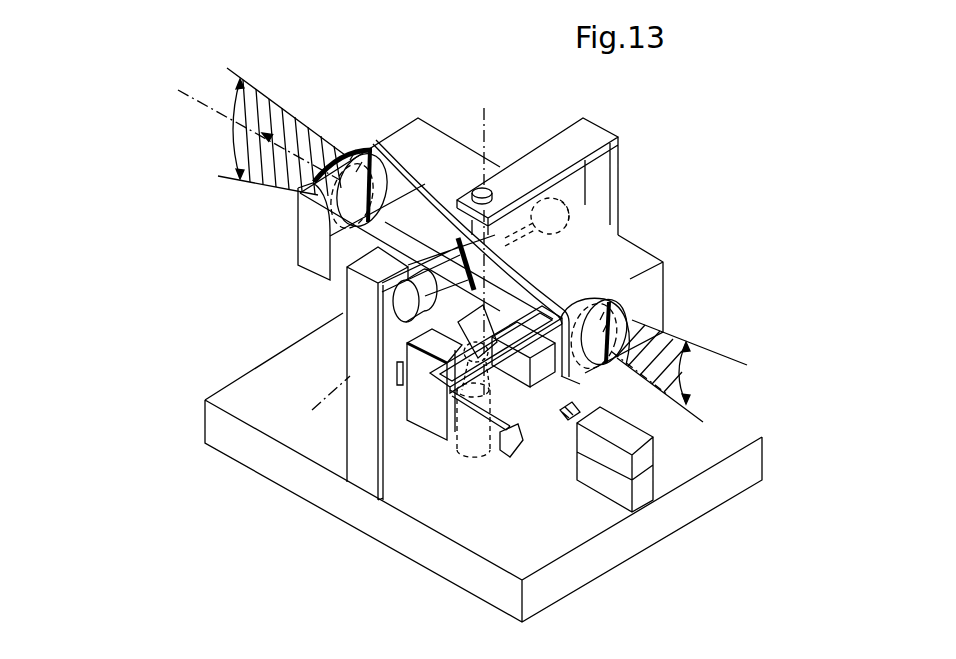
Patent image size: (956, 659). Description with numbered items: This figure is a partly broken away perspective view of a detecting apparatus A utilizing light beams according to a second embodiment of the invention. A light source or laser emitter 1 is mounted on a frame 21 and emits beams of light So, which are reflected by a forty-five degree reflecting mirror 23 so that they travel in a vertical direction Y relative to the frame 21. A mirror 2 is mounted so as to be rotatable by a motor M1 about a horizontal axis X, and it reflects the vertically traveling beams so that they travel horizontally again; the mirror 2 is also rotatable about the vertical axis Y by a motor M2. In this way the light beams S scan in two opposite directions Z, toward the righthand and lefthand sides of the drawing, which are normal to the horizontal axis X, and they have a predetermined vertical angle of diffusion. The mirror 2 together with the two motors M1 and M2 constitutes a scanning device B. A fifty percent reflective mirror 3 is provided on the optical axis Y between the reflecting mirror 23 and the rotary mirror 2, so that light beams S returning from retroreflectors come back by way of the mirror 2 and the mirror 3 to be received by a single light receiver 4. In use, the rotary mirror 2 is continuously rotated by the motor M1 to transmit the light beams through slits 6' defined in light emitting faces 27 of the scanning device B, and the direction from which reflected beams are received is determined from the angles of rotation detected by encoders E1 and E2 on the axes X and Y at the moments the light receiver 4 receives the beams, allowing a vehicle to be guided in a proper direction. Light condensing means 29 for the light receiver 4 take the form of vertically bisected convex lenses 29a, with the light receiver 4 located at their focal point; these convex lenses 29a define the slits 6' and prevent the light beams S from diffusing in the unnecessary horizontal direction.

The light source or laser emitter 1 is at (650, 462).
The mirror 2 is at (507, 272).
The 50% reflective mirror 3 is at (563, 300).
The light receiver 4 is at (574, 386).
The slits 6' is at (544, 230).
The frame 21 is at (592, 574).
The 45 degree reflecting mirror 23 is at (470, 440).
The light emitting faces 27 is at (357, 145).
The light condensing means 29 is at (478, 241).
The vertically bisected convex lenses 29a is at (372, 148).
The detecting apparatus A is at (477, 604).
The scanning device B is at (410, 436).
The encoder E1 is at (612, 202).
The encoder E2 is at (490, 455).
The motor M1 is at (398, 301).
The motor M2 is at (460, 450).
The light beams S is at (278, 173).
The beams of light SO is at (565, 412).
The horizontal axis X is at (323, 407).
The vertical direction / vertical axis Y is at (484, 241).
The two opposite directions Z is at (246, 126).